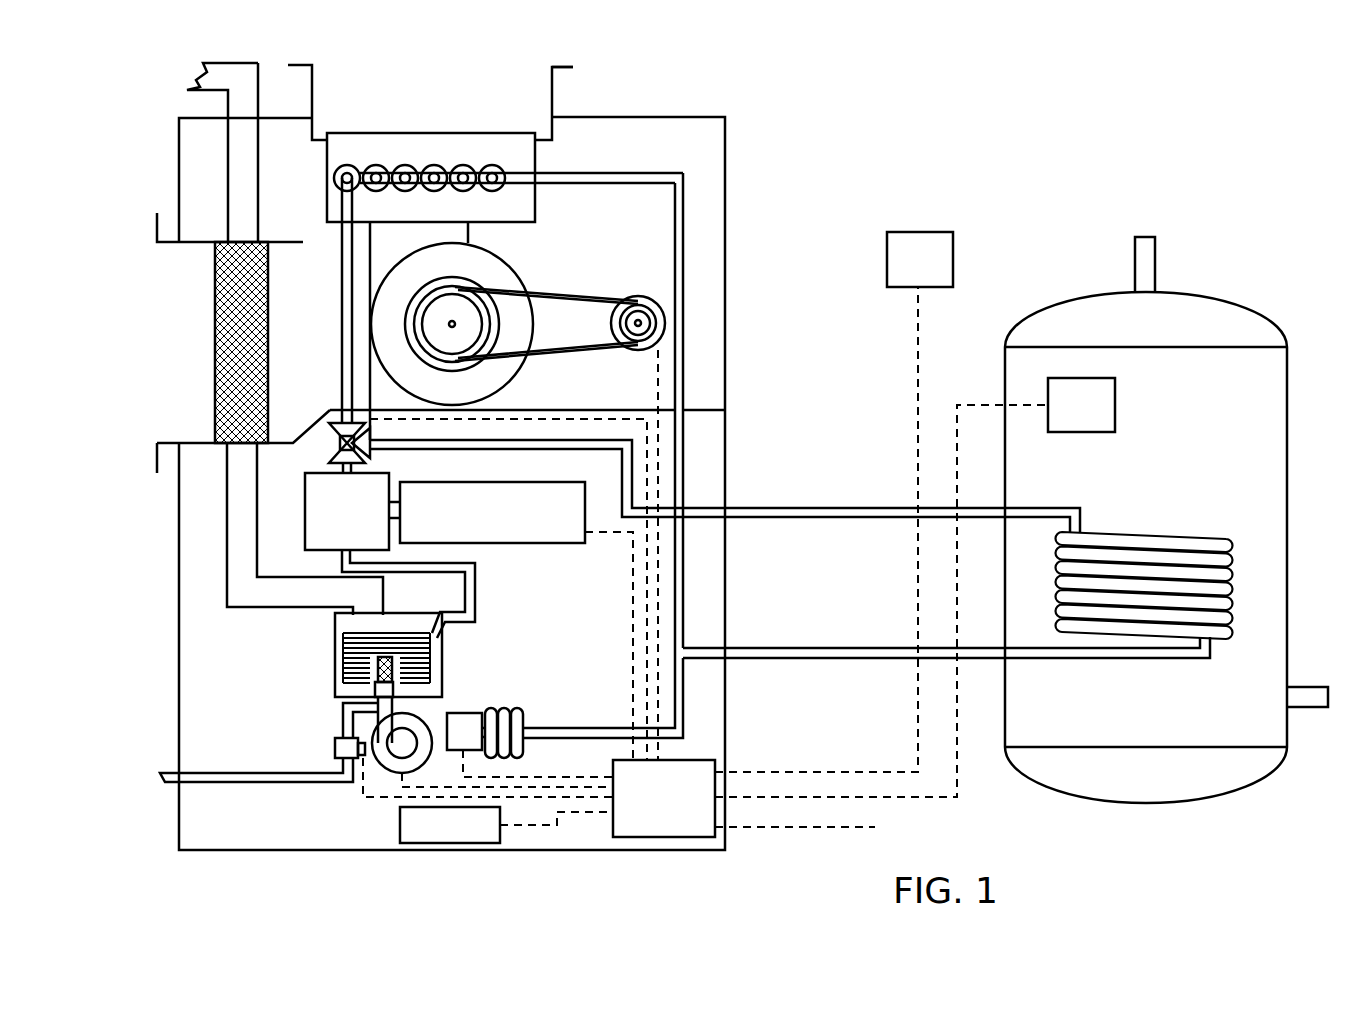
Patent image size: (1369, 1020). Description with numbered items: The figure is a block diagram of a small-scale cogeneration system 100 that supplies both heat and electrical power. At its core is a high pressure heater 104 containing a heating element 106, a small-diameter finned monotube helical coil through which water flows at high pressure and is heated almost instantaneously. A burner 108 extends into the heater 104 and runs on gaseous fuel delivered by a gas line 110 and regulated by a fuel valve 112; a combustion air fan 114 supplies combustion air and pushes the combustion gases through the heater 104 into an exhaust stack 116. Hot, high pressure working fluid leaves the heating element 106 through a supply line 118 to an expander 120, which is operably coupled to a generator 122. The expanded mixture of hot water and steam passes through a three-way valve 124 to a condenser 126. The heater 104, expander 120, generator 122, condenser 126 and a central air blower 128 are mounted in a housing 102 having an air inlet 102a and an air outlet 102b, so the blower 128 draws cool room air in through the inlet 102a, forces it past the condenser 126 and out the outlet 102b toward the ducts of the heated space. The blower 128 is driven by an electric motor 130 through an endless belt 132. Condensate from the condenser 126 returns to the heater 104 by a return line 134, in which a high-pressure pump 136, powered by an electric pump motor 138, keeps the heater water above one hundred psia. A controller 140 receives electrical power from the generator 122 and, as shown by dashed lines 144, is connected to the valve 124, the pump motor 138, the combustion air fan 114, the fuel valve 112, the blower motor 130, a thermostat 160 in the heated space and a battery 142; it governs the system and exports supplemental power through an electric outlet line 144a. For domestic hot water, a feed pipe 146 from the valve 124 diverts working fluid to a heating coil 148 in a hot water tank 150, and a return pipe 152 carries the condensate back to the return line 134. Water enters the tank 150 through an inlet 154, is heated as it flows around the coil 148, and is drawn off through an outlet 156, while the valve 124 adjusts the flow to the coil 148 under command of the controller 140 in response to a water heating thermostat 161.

The cogeneration system 100 is at (820, 137).
The housing 102 is at (727, 262).
The air inlet 102a is at (172, 242).
The air outlet 102b is at (553, 85).
The high pressure heater 104 is at (337, 648).
The heating element 106 is at (436, 653).
The burner 108 is at (385, 705).
The gas line 110 is at (243, 772).
The fuel valve 112 is at (337, 742).
The combustion air fan 114 is at (385, 772).
The exhaust stack 116 is at (227, 532).
The supply line 118 is at (475, 590).
The expander 120 is at (305, 497).
The generator 122 is at (485, 543).
The three-way valve 124 is at (330, 447).
The condenser 126 is at (327, 165).
The central air blower 128 is at (505, 266).
The electric motor 130 is at (645, 350).
The endless belt 132 is at (570, 295).
The return line 134 is at (687, 362).
The high-pressure pump 136 is at (515, 715).
The electric pump motor 138 is at (462, 712).
The controller 140 is at (685, 838).
The battery 142 is at (398, 846).
The dashed lines 144 is at (658, 750).
The electric outlet line 144a is at (795, 846).
The feed pipe 146 is at (816, 508).
The heating coil 148 is at (1128, 531).
The hot water tank 150 is at (1290, 446).
The return pipe 152 is at (808, 657).
The inlet 154 is at (1305, 688).
The outlet 156 is at (1158, 260).
The thermostat 160 is at (954, 262).
The water heating thermostat 161 is at (1116, 404).